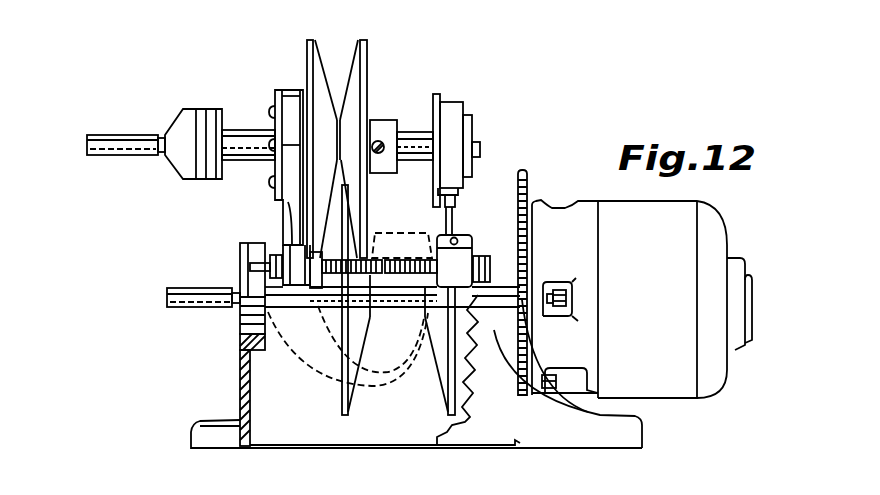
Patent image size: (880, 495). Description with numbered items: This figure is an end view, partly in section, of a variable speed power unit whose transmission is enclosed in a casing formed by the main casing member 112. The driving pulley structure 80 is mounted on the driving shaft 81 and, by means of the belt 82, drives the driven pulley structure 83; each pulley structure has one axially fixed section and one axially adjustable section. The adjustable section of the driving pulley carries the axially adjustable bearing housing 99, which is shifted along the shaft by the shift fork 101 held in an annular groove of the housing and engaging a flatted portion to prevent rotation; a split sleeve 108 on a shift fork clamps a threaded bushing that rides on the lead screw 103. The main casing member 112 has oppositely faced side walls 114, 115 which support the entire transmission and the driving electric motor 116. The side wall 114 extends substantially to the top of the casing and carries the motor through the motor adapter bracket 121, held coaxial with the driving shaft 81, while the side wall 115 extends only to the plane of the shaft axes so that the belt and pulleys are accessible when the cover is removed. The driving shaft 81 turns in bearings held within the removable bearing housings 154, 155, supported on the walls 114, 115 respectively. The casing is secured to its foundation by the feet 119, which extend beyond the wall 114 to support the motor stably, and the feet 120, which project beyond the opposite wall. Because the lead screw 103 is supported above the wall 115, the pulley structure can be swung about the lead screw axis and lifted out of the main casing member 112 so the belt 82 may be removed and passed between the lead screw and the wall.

The driving pulley structure 80 is at (348, 61).
The driving shaft 81 is at (411, 137).
The belt 82 is at (322, 354).
The driven pulley structure 83 is at (403, 416).
The bearing housing 99 is at (273, 118).
The shift fork 101 is at (283, 221).
The lead screw 103 is at (252, 267).
The split sleeve 108 is at (470, 258).
The main casing member 112 is at (492, 432).
The side wall 114 is at (530, 190).
The side wall 115 is at (245, 293).
The driving electric motor 116 is at (656, 295).
The feet 119 is at (637, 436).
The feet 120 is at (200, 421).
The motor adapter bracket 121 is at (563, 208).
The bearing housing 154 is at (465, 113).
The bearing housing 155 is at (182, 110).